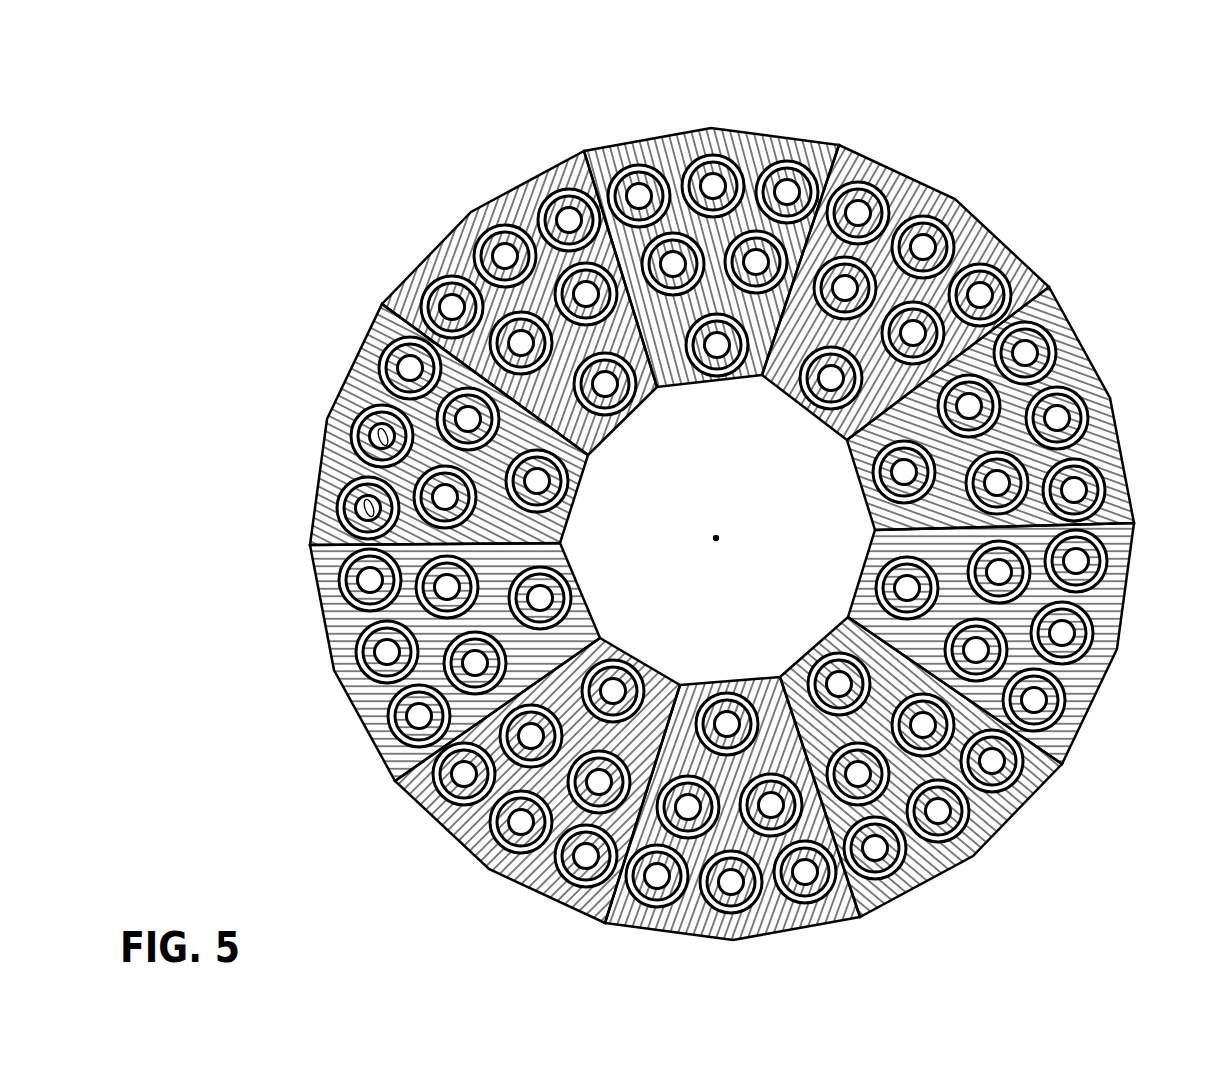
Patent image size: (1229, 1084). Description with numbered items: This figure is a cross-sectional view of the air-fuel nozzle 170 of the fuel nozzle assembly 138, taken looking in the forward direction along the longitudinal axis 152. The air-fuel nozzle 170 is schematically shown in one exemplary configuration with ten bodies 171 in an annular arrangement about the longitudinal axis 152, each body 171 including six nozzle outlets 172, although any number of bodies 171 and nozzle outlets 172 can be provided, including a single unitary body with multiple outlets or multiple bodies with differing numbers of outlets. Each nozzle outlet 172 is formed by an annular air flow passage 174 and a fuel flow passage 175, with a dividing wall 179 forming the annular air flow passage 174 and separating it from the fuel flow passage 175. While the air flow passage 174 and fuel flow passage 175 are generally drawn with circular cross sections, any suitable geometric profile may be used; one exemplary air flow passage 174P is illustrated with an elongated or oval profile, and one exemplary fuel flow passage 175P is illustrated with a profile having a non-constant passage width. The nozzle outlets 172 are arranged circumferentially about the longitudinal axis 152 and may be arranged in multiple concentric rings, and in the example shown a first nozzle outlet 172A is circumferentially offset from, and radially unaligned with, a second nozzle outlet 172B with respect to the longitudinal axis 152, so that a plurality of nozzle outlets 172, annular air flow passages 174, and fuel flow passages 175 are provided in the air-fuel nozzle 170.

The fuel nozzle assembly 138 is at (1122, 165).
The longitudinal axis 152 is at (717, 537).
The air-fuel nozzle 170 is at (924, 174).
The body 171 is at (993, 235).
The nozzle outlet 172 is at (420, 282).
The first nozzle outlet 172A is at (650, 232).
The second nozzle outlet 172B is at (695, 148).
The annular air flow passage 174 is at (504, 233).
The fuel flow passage 175 is at (505, 257).
The dividing wall 179 is at (490, 260).
The exemplary air flow passage 174P is at (380, 438).
The exemplary fuel flow passage 175P is at (368, 505).